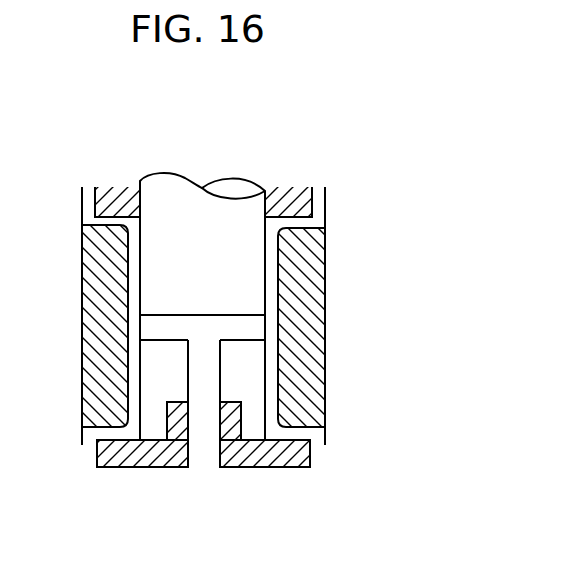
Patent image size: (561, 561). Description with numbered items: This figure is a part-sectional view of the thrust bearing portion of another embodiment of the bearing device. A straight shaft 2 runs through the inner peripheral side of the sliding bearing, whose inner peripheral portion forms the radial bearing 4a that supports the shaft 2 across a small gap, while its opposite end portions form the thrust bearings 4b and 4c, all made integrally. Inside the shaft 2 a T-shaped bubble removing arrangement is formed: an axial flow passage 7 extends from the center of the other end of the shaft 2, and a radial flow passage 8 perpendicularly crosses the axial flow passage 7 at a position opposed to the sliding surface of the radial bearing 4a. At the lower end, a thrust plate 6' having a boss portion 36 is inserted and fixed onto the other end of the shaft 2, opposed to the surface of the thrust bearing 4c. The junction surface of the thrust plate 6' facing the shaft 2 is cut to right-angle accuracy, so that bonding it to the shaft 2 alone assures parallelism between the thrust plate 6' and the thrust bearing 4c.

The shaft 2 is at (187, 188).
The radial bearing 4a is at (280, 275).
The thrust bearing 4b is at (307, 222).
The thrust bearing 4c is at (312, 427).
The radial flow passage 8 is at (257, 325).
The axial flow passage 7 is at (205, 457).
The boss portion 36 is at (168, 425).
The thrust plate 6' is at (203, 482).